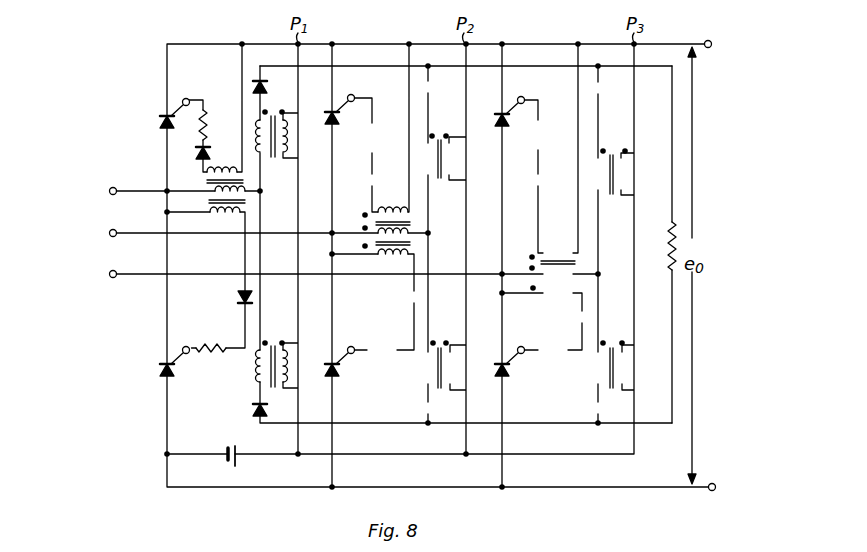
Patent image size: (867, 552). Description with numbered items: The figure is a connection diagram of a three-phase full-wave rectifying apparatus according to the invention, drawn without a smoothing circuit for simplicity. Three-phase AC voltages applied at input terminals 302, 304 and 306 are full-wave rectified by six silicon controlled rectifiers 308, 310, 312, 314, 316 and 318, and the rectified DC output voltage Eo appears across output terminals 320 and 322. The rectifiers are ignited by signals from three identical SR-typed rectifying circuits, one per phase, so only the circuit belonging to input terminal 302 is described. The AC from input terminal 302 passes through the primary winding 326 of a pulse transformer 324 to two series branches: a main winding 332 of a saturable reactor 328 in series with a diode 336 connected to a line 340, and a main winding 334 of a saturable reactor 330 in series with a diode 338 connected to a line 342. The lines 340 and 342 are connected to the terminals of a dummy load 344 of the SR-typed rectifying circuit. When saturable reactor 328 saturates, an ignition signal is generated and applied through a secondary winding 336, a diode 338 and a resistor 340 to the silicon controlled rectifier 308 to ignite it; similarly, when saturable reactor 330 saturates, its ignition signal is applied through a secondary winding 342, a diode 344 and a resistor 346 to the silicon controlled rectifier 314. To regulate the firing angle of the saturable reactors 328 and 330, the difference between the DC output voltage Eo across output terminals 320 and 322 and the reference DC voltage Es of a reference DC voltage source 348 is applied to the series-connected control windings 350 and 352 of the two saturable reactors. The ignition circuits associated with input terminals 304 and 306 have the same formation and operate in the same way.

The input terminal 302 is at (113, 187).
The input terminal 304 is at (115, 230).
The input terminal 306 is at (113, 278).
The silicon controlled rectifier 308 is at (172, 110).
The silicon controlled rectifier 310 is at (336, 112).
The silicon controlled rectifier 312 is at (503, 112).
The silicon controlled rectifier 314 is at (176, 373).
The silicon controlled rectifier 316 is at (340, 372).
The silicon controlled rectifier 318 is at (509, 372).
The output terminal 320 is at (711, 41).
The output terminal 322 is at (713, 484).
The pulse transformer 324 is at (158, 152).
The primary winding 326 is at (208, 192).
The saturable reactor 328 is at (274, 160).
The saturable reactor 330 is at (276, 339).
The main winding 332 is at (255, 129).
The main winding 334 is at (257, 374).
The diode 336 is at (258, 81).
The diode 338 is at (196, 160).
The line 340 is at (206, 125).
The line 342 is at (217, 216).
The dummy load 344 is at (238, 298).
The resistor 346 is at (210, 344).
The reference DC voltage source 348 is at (235, 465).
The control winding 350 is at (286, 144).
The control winding 352 is at (288, 377).